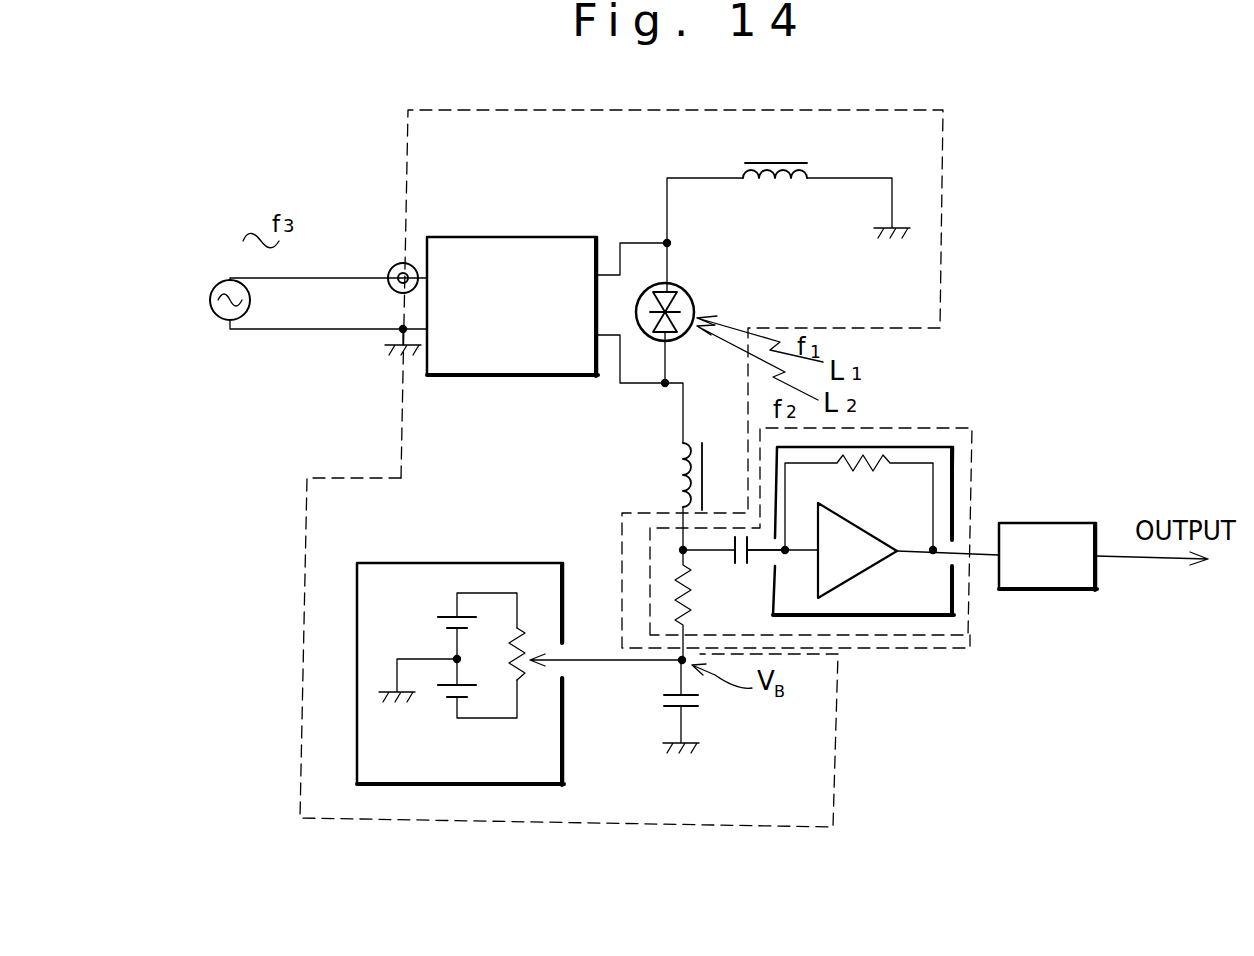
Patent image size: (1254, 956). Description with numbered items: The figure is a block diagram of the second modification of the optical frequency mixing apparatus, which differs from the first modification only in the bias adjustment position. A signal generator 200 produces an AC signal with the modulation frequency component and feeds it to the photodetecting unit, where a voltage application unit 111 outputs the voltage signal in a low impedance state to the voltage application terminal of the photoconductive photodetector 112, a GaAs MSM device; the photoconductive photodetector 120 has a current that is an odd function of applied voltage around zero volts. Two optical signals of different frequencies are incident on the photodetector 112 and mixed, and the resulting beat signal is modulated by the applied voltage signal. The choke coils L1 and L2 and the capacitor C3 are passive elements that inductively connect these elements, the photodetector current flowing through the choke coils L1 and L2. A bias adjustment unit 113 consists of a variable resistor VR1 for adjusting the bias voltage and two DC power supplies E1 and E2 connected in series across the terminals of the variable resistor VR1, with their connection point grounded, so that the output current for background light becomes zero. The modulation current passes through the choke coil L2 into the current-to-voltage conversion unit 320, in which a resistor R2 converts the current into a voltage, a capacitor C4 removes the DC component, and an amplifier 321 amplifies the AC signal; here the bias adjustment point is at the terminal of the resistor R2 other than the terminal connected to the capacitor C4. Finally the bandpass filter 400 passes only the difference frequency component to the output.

The signal generator 200 is at (220, 284).
The voltage application unit 111 is at (533, 237).
The photoconductive photodetector 112 is at (693, 297).
The bias adjustment unit 113 is at (564, 562).
The photoconductive photodetector 120 is at (943, 291).
The current-to-voltage conversion unit 320 is at (946, 642).
The amplifier 321 is at (954, 460).
The bandpass filter 400 is at (1076, 591).
The choke coil L1 is at (788, 203).
The choke coil L2 is at (664, 476).
The capacitor C3 is at (703, 706).
The capacitor C4 is at (734, 566).
The resistor R2 is at (704, 605).
The variable resistor VR1 is at (506, 699).
The DC power supply E1 is at (436, 605).
The DC power supply E2 is at (436, 720).